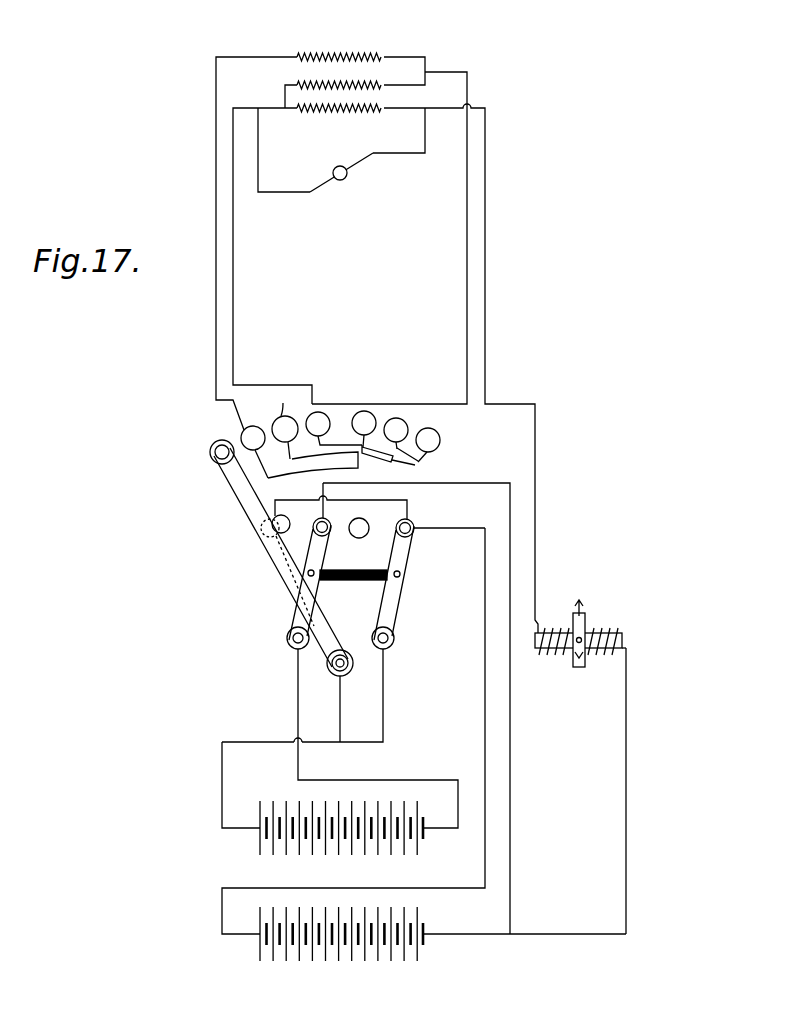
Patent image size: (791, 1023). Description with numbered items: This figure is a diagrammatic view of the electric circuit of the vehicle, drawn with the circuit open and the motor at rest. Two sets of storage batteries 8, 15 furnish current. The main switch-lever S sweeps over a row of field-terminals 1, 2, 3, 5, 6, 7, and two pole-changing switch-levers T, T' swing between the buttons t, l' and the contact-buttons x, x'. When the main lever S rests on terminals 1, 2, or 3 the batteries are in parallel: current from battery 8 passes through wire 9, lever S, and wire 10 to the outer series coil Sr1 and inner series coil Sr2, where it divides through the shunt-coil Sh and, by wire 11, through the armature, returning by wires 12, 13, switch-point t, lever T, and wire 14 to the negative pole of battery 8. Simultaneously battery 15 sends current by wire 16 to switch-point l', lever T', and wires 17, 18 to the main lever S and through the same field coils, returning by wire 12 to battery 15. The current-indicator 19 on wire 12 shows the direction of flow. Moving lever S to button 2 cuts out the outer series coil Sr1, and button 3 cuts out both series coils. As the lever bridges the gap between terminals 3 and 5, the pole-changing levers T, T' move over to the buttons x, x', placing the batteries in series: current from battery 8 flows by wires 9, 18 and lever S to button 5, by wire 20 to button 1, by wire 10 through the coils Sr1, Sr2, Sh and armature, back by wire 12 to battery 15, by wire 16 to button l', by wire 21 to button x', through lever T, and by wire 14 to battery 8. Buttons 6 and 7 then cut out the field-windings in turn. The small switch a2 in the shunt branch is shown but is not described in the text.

The field-terminal 1 is at (254, 452).
The field-terminal 2 is at (285, 437).
The field-terminal 3 is at (334, 428).
The field-terminal 5 is at (364, 429).
The field-terminal 6 is at (396, 433).
The field-terminal 7 is at (428, 445).
The storage battery 8 is at (261, 808).
The wire 9 is at (222, 792).
The wire 10 is at (248, 58).
The wire 11 is at (262, 160).
The wire 12 is at (447, 110).
The wire 13 is at (480, 485).
The wire 14 is at (298, 708).
The storage battery 15 is at (259, 942).
The wire 16 is at (485, 714).
The wire 17 is at (383, 708).
The wire 18 is at (340, 708).
The current-indicator 19 is at (588, 624).
The wire 20 is at (305, 474).
The wire 21 is at (341, 501).
The main switch-lever S is at (275, 568).
The pole-changing switch-lever T is at (308, 587).
The pole-changing switch-lever T' is at (380, 587).
The switch-point button t is at (329, 517).
The switch-point button l' is at (440, 518).
The contact-button x is at (359, 540).
The contact-button x' is at (287, 562).
The switch a2 is at (341, 181).
The shunt-coil Sh is at (307, 254).
The outer series coil Sr1 is at (361, 58).
The inner series coil Sr2 is at (385, 82).